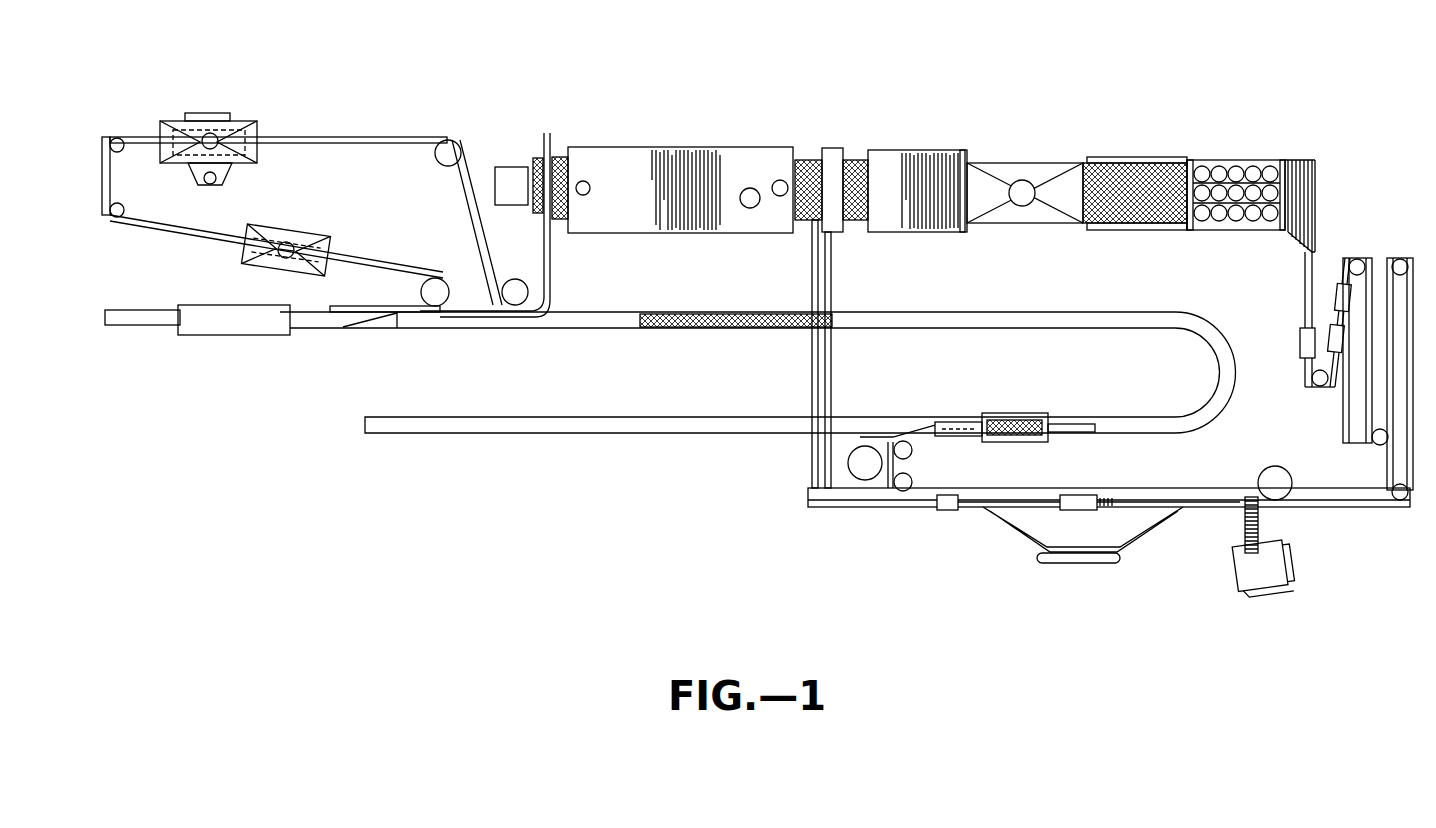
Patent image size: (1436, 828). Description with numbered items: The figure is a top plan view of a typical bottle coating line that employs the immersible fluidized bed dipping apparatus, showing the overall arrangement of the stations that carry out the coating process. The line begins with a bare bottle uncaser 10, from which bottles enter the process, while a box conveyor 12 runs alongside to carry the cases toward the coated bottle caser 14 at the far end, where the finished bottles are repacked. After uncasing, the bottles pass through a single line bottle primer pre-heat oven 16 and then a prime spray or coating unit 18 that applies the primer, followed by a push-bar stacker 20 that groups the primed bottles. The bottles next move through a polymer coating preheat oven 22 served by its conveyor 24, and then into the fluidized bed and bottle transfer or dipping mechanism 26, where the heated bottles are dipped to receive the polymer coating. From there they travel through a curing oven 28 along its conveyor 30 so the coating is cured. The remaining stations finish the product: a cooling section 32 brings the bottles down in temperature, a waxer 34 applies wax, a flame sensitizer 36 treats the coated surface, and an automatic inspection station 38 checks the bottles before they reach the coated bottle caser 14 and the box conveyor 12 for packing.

The bare bottle uncaser 10 is at (225, 335).
The box conveyor 12 is at (868, 333).
The coated bottle caser 14 is at (1020, 420).
The single line bottle primer pre-heat oven 16 is at (322, 247).
The prime spray or coating unit 18 is at (178, 133).
The push-bar stacker 20 is at (512, 167).
The polymer coating preheat oven 22 is at (660, 150).
The conveyor 24 is at (806, 160).
The fluidized bed and bottle transfer or dipping mechanism 26 is at (836, 150).
The curing oven 28 is at (985, 185).
The conveyor 30 is at (1105, 175).
The cooling section 32 is at (1232, 162).
The waxer 34 is at (1300, 340).
The flame sensitizer 36 is at (1348, 340).
The automatic inspection station 38 is at (1082, 500).